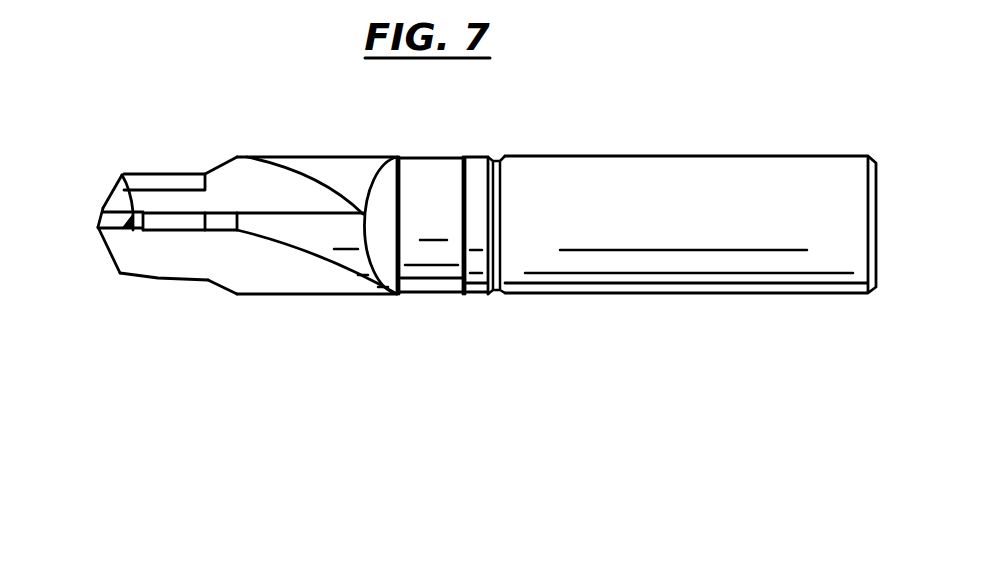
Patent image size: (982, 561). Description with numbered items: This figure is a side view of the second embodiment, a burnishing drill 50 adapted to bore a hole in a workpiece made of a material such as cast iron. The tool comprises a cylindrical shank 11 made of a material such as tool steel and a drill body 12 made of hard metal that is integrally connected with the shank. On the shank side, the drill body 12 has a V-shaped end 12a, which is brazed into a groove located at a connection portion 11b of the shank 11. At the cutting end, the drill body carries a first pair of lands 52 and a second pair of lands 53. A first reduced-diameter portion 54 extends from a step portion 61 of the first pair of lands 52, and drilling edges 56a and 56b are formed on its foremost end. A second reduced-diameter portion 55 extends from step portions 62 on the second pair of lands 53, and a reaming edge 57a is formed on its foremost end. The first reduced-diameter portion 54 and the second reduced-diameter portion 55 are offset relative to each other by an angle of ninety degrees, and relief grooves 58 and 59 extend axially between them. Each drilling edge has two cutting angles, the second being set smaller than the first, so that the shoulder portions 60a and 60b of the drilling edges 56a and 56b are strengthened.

The burnishing drill 50 is at (658, 148).
The shank 11 is at (380, 425).
The drill body 12 is at (375, 423).
The connection portion 11b is at (424, 168).
The V-shaped end 12a is at (352, 252).
The first pair of lands 52 is at (307, 157).
The second pair of lands 53 is at (268, 218).
The first reduced-diameter portion 54 is at (173, 223).
The second reduced-diameter portion 55 is at (150, 172).
The drilling edge 56a is at (106, 205).
The drilling edge 56b is at (102, 240).
The reaming edge 57a is at (122, 208).
The relief groove 58 is at (317, 192).
The relief groove 59 is at (248, 240).
The shoulder portion 60a is at (123, 177).
The shoulder portion 60b is at (118, 275).
The step portion 61 is at (218, 165).
The step portion 62 is at (225, 214).